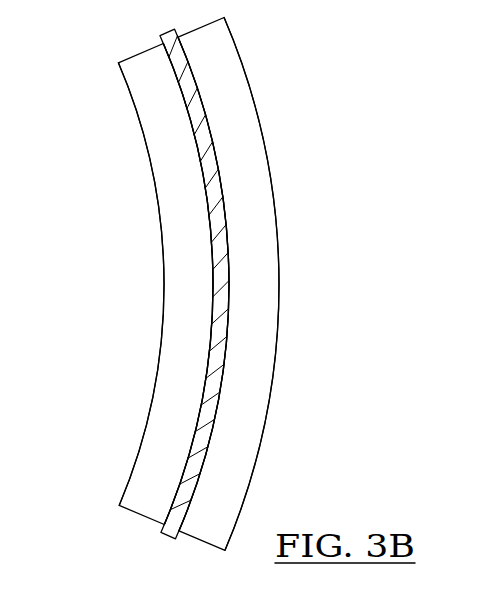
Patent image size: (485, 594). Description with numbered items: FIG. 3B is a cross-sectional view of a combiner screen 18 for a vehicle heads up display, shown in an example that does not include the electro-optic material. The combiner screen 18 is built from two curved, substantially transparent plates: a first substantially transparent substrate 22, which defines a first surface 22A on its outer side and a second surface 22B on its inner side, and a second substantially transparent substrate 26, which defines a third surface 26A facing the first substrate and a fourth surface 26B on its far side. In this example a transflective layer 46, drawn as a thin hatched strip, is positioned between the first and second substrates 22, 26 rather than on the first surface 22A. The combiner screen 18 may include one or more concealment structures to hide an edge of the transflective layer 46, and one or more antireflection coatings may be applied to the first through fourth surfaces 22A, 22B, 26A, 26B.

The combiner screen 18 is at (331, 62).
The first substantially transparent substrate 22 is at (172, 136).
The first surface 22A is at (161, 280).
The second surface 22B is at (188, 460).
The second substantially transparent substrate 26 is at (243, 137).
The third surface 26A is at (230, 260).
The fourth surface 26B is at (276, 385).
The transflective layer 46 is at (202, 120).